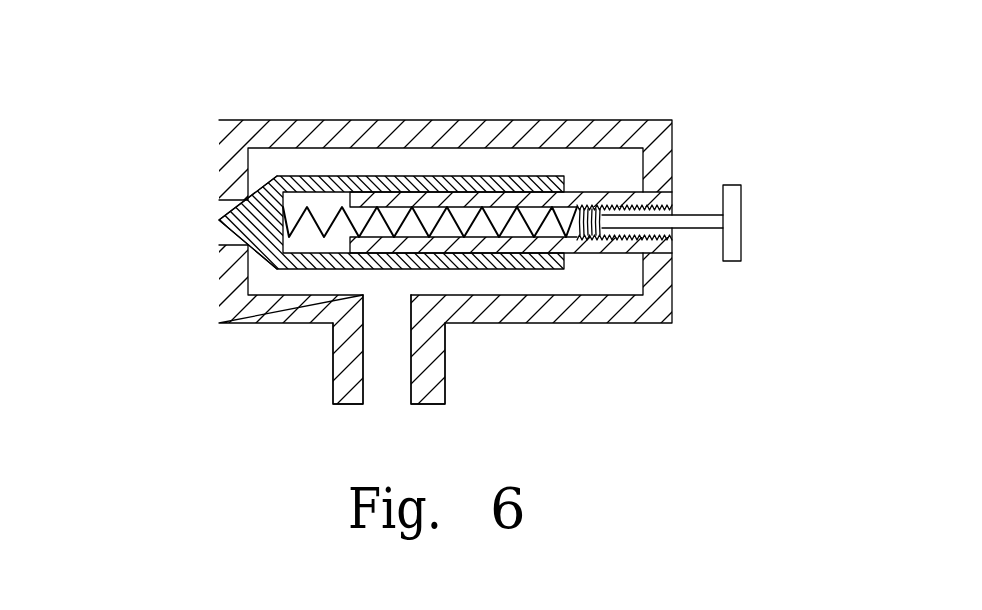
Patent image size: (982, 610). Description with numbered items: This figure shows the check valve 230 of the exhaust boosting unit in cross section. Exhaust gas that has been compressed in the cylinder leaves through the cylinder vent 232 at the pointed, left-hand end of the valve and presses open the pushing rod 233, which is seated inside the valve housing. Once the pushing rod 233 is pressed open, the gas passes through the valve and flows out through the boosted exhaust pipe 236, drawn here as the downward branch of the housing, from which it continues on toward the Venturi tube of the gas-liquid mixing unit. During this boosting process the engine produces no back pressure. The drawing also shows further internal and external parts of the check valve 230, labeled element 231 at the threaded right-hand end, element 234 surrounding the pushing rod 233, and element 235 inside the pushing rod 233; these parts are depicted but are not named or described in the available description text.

The check valve 230 is at (672, 152).
The adjusting knob 231 is at (741, 213).
The cylinder vent 232 is at (219, 218).
The pushing rod 233 is at (316, 182).
The piston sleeve 234 is at (585, 192).
The spring 235 is at (313, 210).
The boosted exhaust pipe 236 is at (333, 387).